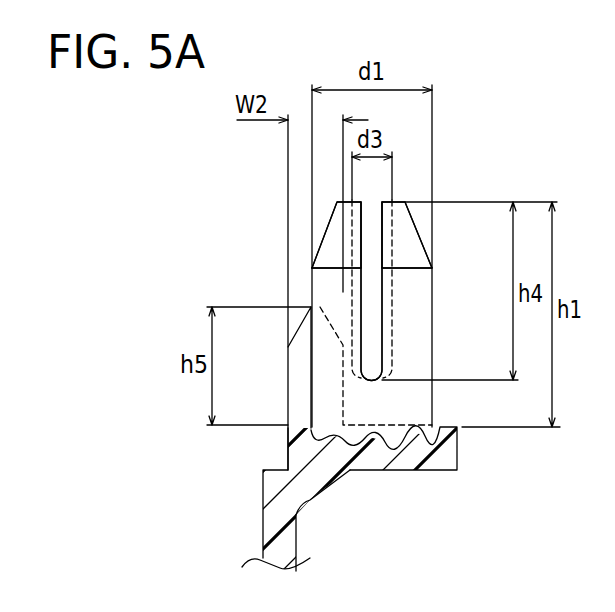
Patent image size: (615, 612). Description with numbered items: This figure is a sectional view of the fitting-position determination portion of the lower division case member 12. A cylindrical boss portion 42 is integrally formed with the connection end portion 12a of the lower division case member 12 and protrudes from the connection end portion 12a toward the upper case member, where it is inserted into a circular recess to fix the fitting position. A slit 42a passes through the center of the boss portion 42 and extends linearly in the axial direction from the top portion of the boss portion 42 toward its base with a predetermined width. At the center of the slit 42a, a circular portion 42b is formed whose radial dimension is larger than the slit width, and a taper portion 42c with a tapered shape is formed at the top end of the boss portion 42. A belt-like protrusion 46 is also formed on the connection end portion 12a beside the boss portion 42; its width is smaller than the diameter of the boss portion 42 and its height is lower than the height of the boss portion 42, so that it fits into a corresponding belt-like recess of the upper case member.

The lower division case member 12 is at (336, 500).
The connection end portion 12a is at (450, 436).
The cylindrical boss portion 42 is at (415, 325).
The slit 42a is at (368, 287).
The circular portion 42b is at (325, 235).
The taper portion 42c is at (414, 228).
The belt-like protrusion 46 is at (288, 380).